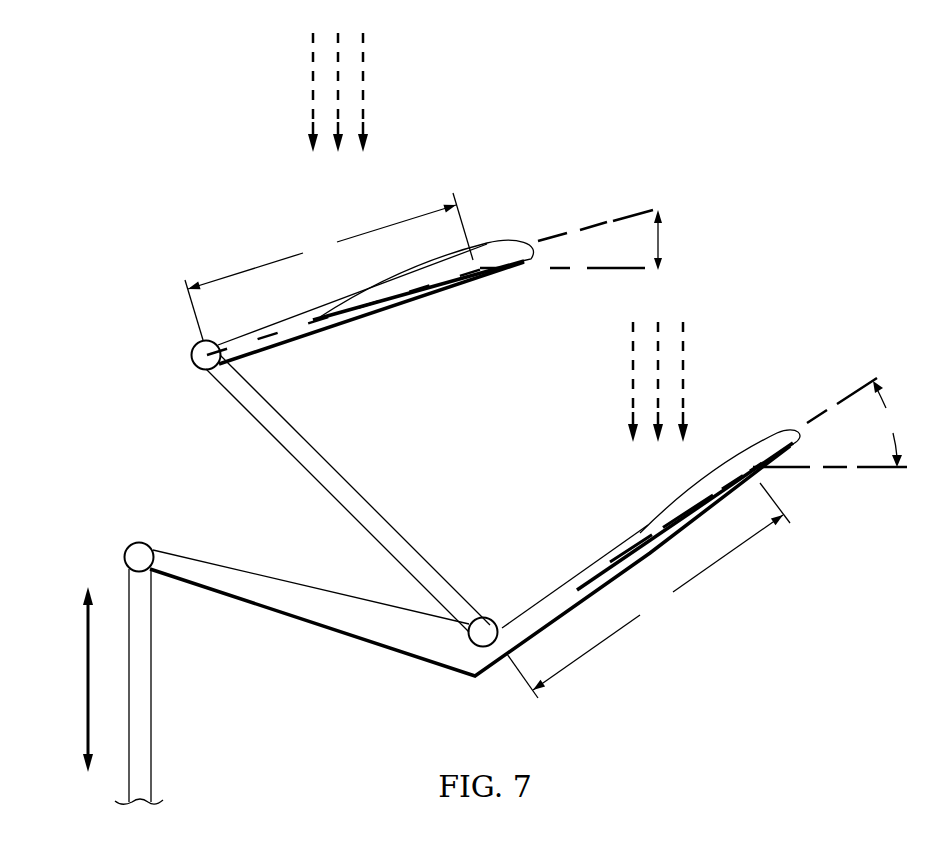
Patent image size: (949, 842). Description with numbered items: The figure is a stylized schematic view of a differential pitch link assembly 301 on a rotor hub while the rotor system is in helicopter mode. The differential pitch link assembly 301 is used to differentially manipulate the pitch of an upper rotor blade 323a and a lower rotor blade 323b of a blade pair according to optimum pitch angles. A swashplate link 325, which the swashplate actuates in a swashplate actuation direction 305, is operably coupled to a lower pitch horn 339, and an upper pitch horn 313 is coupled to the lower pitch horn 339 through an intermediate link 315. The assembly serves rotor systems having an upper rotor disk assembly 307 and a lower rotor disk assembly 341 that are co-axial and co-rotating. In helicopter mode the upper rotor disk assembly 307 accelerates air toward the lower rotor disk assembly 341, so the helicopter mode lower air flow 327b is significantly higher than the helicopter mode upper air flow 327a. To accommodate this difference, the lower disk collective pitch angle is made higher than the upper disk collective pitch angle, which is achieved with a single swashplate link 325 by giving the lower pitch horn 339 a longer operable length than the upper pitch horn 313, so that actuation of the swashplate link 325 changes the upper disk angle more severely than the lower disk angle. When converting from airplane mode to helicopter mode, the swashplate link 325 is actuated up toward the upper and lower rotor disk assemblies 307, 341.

The differential pitch link assembly 301 is at (716, 83).
The swashplate actuation direction 305 is at (85, 681).
The upper rotor disk assembly 307 is at (271, 203).
The upper pitch horn 313 is at (298, 344).
The intermediate link 315 is at (362, 492).
The upper rotor blade 323a is at (494, 240).
The lower rotor blade 323b is at (775, 428).
The swashplate link 325 is at (151, 689).
The helicopter mode upper air flow 327a is at (313, 86).
The helicopter mode lower air flow 327b is at (633, 378).
The lower pitch horn 339 is at (560, 588).
The lower rotor disk assembly 341 is at (745, 611).